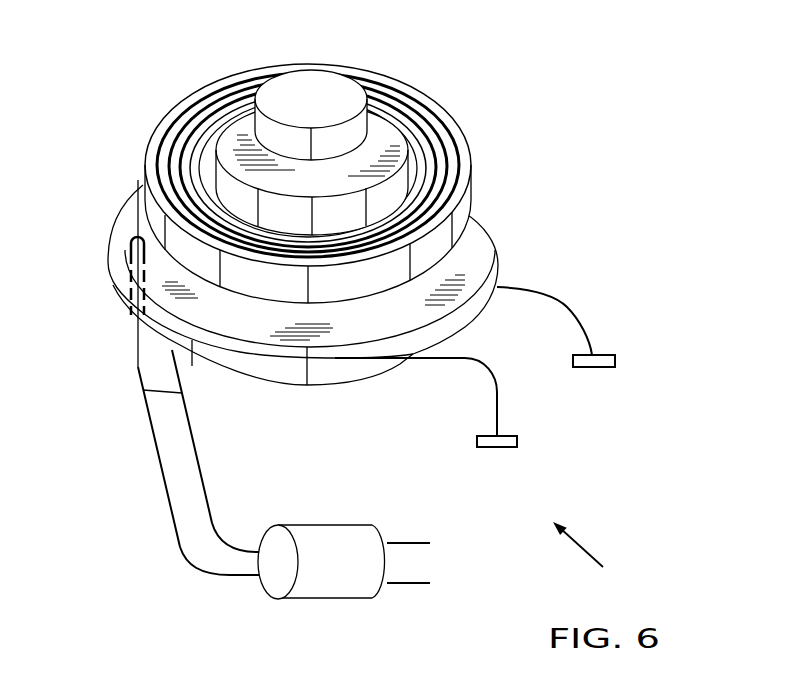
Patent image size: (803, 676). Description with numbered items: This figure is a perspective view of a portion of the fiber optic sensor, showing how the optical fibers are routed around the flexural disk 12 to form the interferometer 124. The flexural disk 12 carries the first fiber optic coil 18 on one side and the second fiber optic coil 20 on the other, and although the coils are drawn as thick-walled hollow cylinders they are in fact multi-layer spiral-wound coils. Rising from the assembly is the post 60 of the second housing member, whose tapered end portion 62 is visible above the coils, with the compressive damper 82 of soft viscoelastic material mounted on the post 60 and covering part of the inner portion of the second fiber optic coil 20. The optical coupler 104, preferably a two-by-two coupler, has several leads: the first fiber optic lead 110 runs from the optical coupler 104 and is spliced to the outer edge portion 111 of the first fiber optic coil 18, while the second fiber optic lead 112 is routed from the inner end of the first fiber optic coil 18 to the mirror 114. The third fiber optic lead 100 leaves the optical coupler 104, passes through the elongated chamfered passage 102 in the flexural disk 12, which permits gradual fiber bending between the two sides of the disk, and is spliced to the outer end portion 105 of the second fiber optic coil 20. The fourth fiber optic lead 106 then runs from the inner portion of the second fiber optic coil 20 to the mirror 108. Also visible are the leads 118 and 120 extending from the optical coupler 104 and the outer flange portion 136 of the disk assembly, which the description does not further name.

The flexural disk 12 is at (490, 228).
The first fiber optic coil 18 is at (397, 375).
The second fiber optic coil 20 is at (178, 108).
The post 60 is at (263, 83).
The end portion 62 is at (370, 122).
The compressive damper 82 is at (413, 177).
The third fiber optic lead 100 is at (160, 447).
The passage 102 is at (128, 268).
The optical coupler 104 is at (332, 598).
The outer end portion 105 is at (135, 215).
The fourth fiber optic lead 106 is at (578, 312).
The mirror 108 is at (617, 362).
The first fiber optic lead 110 is at (197, 437).
The outer edge portion 111 is at (143, 390).
The second fiber optic lead 112 is at (460, 360).
The mirror 114 is at (500, 450).
The lead 118 is at (407, 587).
The lead 120 is at (404, 543).
The interferometer 124 is at (599, 557).
The flange 136 is at (500, 233).